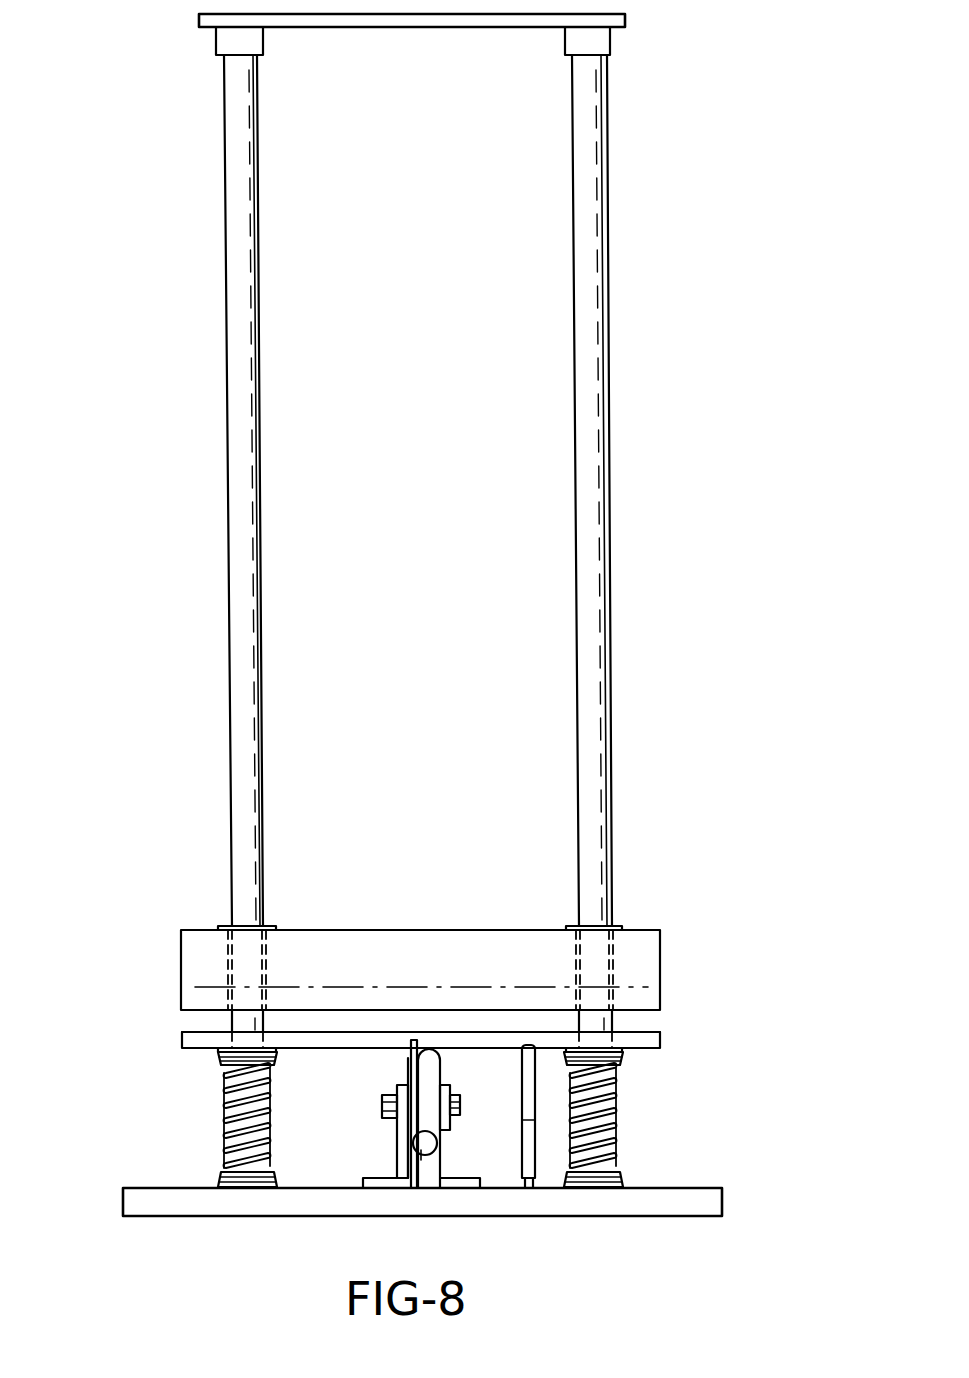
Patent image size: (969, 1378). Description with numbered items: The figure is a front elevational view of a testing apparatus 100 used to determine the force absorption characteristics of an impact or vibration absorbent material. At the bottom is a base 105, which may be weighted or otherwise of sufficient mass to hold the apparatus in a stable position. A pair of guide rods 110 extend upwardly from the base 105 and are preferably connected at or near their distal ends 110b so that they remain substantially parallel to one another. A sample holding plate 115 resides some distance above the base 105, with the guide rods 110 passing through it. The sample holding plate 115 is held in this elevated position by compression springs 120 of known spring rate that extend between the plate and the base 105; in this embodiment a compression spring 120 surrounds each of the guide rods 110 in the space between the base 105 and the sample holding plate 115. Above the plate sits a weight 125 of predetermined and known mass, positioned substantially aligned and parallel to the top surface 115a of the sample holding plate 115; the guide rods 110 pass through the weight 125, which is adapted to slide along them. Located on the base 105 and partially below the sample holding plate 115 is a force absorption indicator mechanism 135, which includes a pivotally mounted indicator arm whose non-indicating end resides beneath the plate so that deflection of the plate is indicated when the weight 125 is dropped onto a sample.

The testing apparatus 100 is at (98, 155).
The base 105 is at (682, 1187).
The guide rods 110 is at (240, 245).
The distal ends of the guide rods 110b is at (636, 107).
The sample holding plate 115 is at (647, 1040).
The top surface of the sample holding plate 115a is at (200, 1032).
The compression springs 120 is at (227, 1098).
The weight 125 is at (637, 940).
The force absorption indicator mechanism 135 is at (386, 1136).